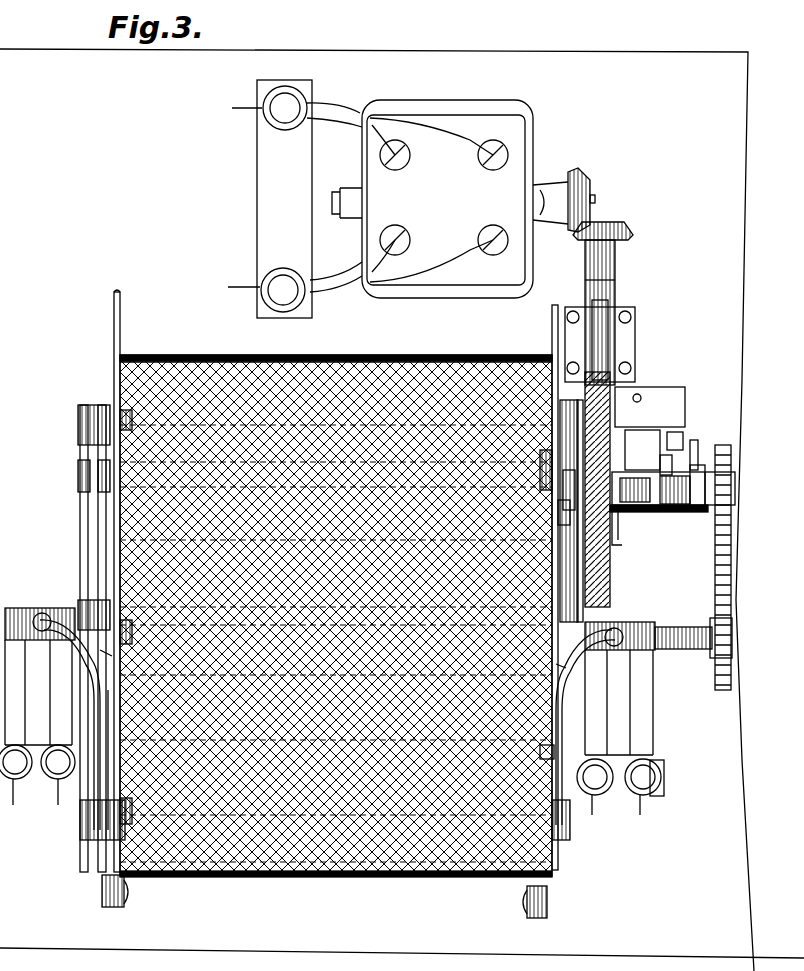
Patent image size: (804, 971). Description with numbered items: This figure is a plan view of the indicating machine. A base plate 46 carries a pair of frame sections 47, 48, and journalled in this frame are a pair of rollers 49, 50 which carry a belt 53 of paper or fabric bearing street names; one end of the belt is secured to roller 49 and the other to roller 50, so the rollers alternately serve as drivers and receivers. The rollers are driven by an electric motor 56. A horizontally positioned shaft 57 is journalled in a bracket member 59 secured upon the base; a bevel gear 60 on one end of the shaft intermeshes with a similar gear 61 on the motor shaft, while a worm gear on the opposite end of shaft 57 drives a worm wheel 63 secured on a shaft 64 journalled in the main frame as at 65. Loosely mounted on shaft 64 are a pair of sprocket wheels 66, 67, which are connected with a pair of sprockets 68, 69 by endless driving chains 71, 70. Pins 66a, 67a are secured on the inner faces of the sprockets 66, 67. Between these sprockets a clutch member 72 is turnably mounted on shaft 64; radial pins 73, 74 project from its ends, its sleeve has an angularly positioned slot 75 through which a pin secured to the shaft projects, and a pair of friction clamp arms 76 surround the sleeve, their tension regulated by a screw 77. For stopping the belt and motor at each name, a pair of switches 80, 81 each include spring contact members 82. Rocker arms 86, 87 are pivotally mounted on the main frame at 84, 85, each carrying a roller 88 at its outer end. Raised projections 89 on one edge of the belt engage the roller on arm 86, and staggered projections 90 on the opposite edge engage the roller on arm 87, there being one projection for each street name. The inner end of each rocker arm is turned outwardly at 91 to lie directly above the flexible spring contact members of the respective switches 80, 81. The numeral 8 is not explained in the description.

The spring 8 is at (668, 496).
The base plate 46 is at (336, 635).
The frame section 47 is at (90, 528).
The frame section 48 is at (578, 598).
The roller 49 is at (124, 337).
The roller 50 is at (121, 748).
The belt 53 is at (234, 358).
The electric motor 56 is at (468, 112).
The shaft 57 is at (600, 346).
The bracket member 59 is at (628, 362).
The bevel gear 60 is at (614, 220).
The bevel gear 61 is at (592, 186).
The worm wheel 63 is at (608, 594).
The shaft 64 is at (552, 480).
The journal 65 is at (556, 545).
The sprocket wheel 66 is at (710, 513).
The pin 66a is at (634, 532).
The sprocket wheel 67 is at (629, 542).
The pin 67a is at (713, 442).
The sprocket 68 is at (617, 456).
The sprocket 69 is at (704, 630).
The endless driving chain 70 is at (556, 440).
The endless driving chain 71 is at (714, 582).
The clutch member 72 is at (676, 515).
The pin 73 is at (635, 490).
The pin 74 is at (682, 490).
The slot 75 is at (668, 498).
The friction clamp arms 76 is at (680, 466).
The screw 77 is at (672, 432).
The switch 80 is at (42, 778).
The switch 81 is at (624, 793).
The spring contact member 82 is at (60, 684).
The pivot 84 is at (112, 818).
The pivot 85 is at (550, 840).
The rocker arm 86 is at (102, 718).
The rocker arm 87 is at (560, 715).
The roller 88 is at (538, 918).
The projections 89 is at (128, 790).
The projections 90 is at (542, 752).
The outwardly turned end 91 is at (556, 668).